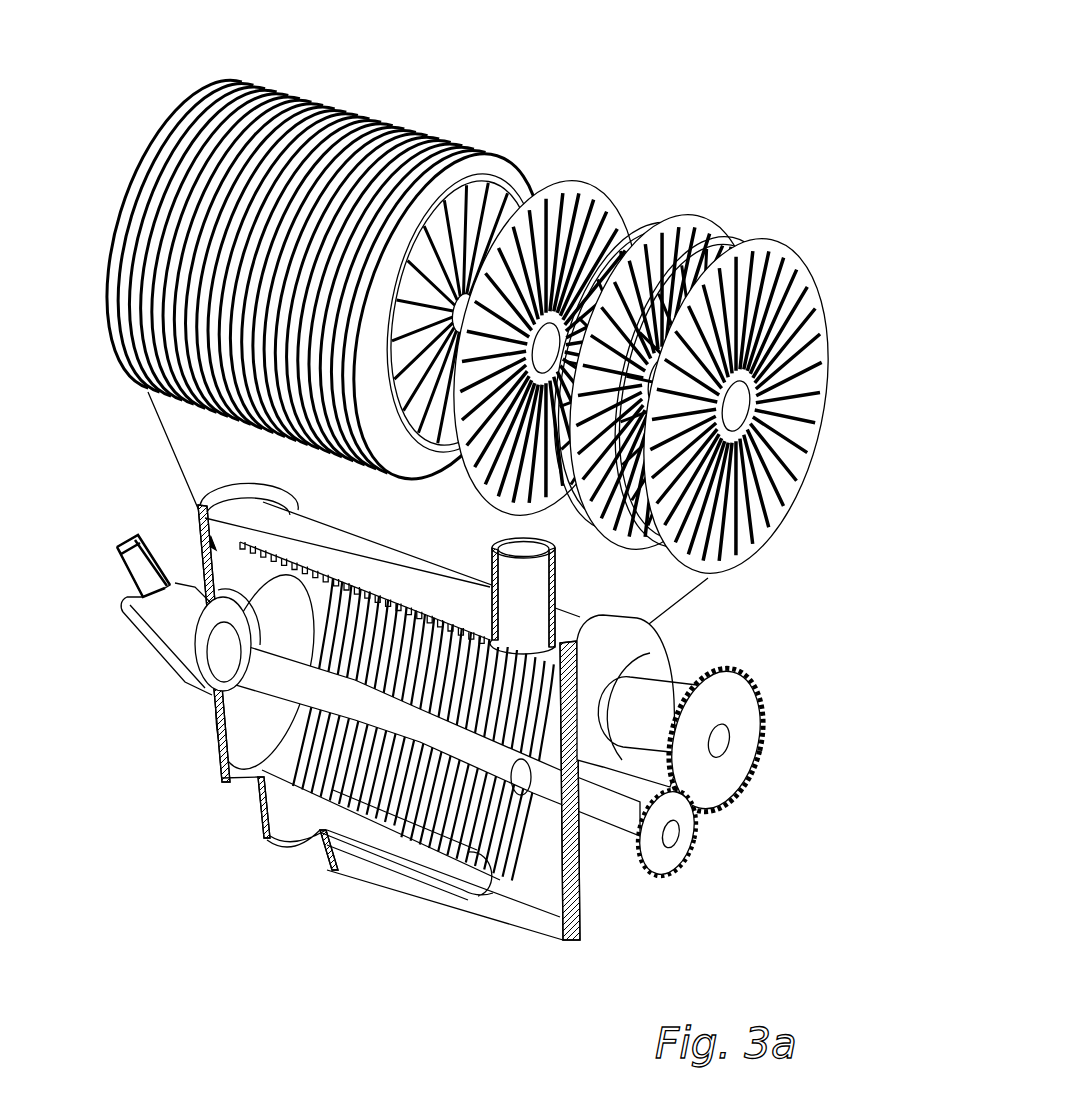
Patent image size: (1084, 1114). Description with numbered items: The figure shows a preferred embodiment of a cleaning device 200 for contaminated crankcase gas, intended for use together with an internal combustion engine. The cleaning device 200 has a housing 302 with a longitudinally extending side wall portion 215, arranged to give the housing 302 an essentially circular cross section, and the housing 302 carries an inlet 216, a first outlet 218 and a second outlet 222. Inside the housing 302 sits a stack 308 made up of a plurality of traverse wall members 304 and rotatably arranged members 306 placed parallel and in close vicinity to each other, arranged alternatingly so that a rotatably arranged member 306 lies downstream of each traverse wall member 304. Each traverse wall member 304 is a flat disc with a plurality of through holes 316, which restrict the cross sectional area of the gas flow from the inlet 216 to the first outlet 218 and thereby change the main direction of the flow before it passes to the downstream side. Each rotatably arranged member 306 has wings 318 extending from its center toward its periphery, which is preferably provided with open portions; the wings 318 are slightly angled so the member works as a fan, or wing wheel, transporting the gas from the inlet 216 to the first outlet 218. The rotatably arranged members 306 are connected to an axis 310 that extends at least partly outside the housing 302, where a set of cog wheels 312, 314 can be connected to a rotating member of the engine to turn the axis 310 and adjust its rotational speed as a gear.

The cleaning device 200 is at (785, 643).
The longitudinally extending side wall portion 215 is at (347, 548).
The inlet 216 is at (513, 575).
The first outlet 218 is at (142, 568).
The second outlet 222 is at (300, 822).
The housing 302 is at (543, 917).
The traverse wall member 304 is at (783, 243).
The rotatably arranged member 306 is at (656, 222).
The stack 308 is at (857, 209).
The axis 310 is at (478, 893).
The cog wheel 312 is at (668, 865).
The cog wheel 314 is at (712, 778).
The through holes 316 is at (753, 236).
The wings 318 is at (662, 236).